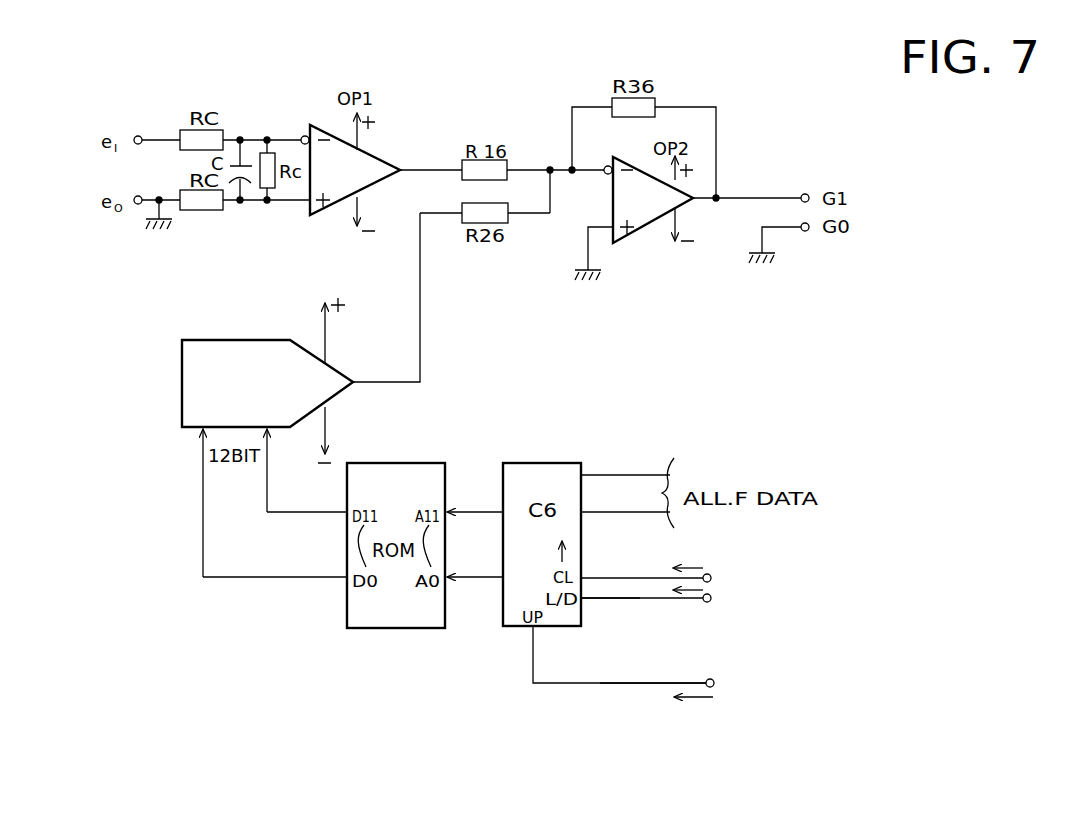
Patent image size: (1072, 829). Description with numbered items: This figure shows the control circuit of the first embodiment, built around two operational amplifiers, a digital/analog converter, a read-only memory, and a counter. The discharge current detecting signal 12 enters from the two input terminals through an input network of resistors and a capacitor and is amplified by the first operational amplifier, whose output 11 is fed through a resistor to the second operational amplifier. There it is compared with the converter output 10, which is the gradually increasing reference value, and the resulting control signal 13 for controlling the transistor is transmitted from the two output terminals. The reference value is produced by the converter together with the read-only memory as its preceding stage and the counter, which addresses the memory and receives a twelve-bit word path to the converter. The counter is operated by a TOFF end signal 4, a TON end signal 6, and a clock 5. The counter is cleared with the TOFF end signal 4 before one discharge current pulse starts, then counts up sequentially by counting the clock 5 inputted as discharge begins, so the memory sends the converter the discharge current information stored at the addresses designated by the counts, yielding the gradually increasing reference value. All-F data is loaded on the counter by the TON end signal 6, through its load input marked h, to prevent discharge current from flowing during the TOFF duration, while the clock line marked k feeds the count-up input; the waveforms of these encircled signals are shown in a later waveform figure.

The discharge current detecting signal 12 is at (158, 131).
The operational amplifier output signal 11 is at (429, 166).
The control signal 13 is at (758, 193).
The output of the digital/analog converter 10 is at (430, 366).
The TOFF end signal 4 is at (767, 576).
The TON end signal 6 is at (761, 598).
The clock 5 is at (678, 662).
The load signal h is at (681, 603).
The clock signal line k is at (663, 679).